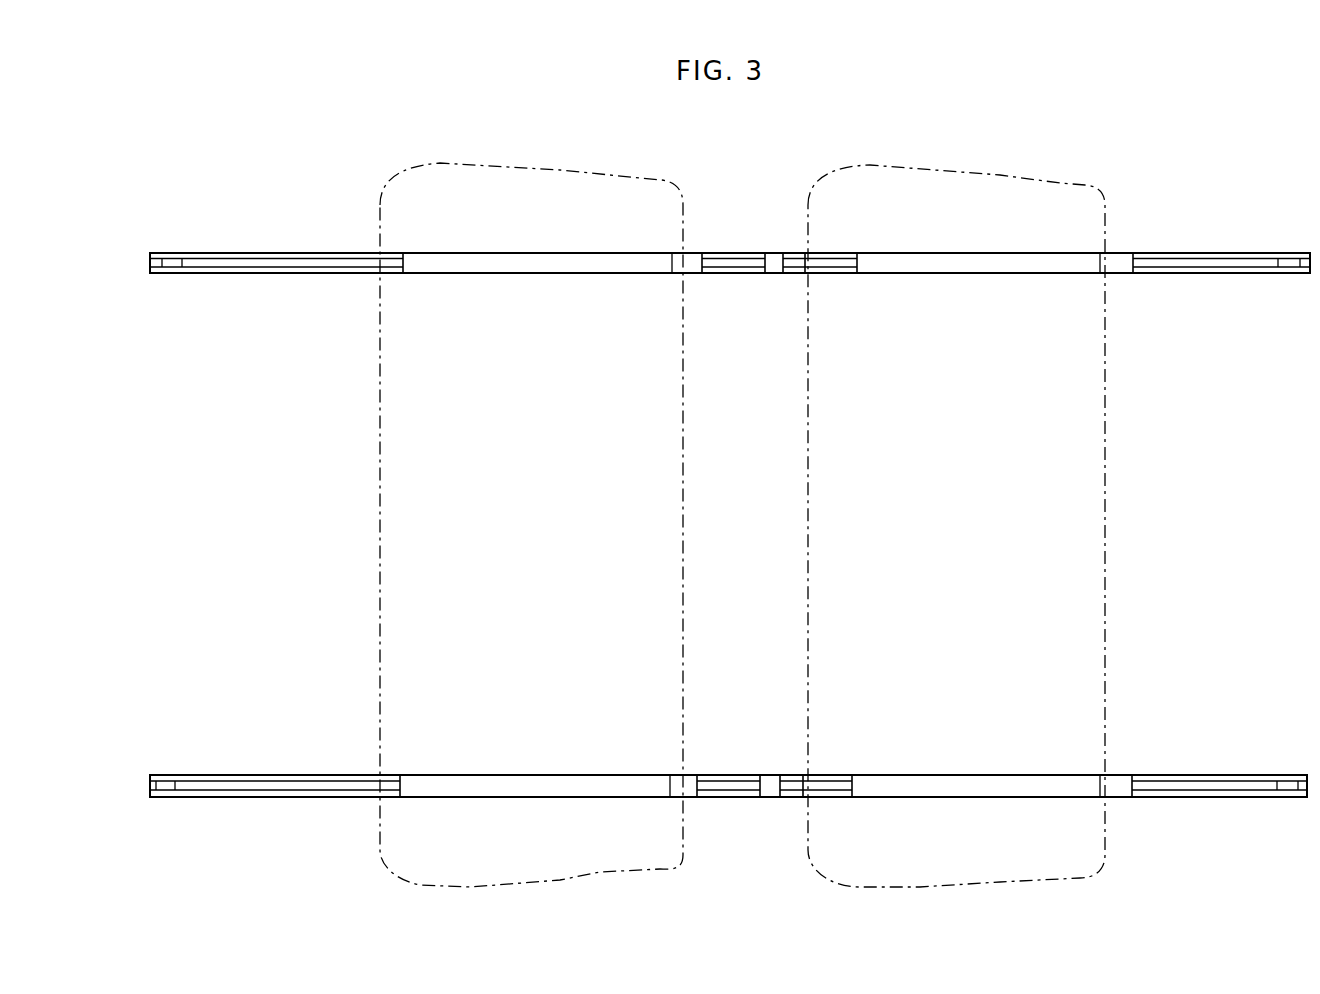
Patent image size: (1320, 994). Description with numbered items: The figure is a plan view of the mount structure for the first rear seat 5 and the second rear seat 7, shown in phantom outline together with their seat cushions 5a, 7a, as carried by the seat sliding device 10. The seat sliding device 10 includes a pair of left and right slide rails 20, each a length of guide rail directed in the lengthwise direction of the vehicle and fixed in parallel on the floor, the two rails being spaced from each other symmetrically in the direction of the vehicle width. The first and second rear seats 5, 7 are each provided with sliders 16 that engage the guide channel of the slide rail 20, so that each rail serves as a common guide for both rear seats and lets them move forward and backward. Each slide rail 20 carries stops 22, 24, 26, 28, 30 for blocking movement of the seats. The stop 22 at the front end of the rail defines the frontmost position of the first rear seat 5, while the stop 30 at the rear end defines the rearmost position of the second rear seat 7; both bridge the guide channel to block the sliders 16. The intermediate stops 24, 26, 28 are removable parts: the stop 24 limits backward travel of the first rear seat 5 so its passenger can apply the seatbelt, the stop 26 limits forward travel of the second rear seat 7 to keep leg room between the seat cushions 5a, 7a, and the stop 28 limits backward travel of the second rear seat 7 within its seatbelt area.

The first rear seat 5 is at (440, 155).
The seat cushion 5a is at (578, 181).
The second rear seat 7 is at (908, 157).
The seat cushion 7a is at (980, 181).
The seat sliding device 10 is at (263, 216).
The slider 16 is at (515, 262).
The slide rail 20 is at (314, 253).
The stop 22 is at (170, 259).
The stop 24 is at (690, 262).
The stop 26 is at (775, 262).
The stop 28 is at (1122, 262).
The stop 30 is at (1288, 262).